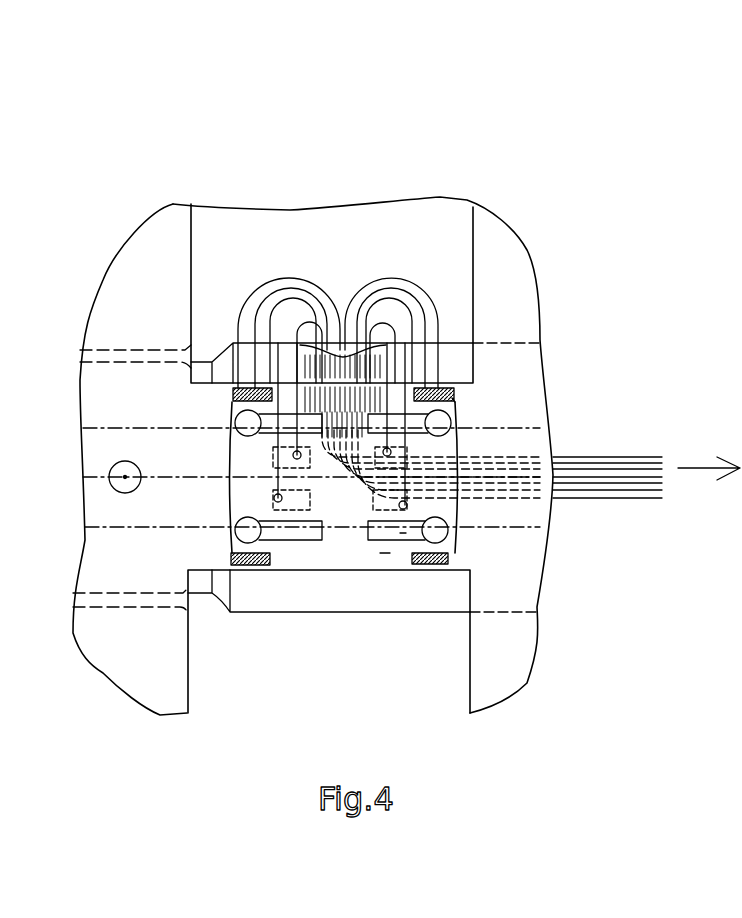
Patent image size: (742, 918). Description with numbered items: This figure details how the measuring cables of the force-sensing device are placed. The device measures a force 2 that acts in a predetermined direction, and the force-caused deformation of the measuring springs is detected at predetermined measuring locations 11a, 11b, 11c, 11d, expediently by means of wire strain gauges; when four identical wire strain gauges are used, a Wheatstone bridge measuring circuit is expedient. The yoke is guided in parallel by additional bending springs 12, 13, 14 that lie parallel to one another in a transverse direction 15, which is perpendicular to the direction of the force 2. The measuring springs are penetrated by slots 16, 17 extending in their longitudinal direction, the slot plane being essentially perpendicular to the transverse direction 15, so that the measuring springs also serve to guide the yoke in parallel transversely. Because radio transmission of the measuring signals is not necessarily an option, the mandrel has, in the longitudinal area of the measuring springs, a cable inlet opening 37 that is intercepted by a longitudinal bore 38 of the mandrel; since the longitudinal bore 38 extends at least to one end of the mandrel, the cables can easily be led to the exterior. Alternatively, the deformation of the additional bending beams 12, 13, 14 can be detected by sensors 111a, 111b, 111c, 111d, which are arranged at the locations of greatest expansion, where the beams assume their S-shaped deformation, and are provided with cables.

The force 2 is at (125, 477).
The measuring location 11a is at (300, 507).
The measuring location 11b is at (302, 460).
The measuring location 11c is at (458, 420).
The measuring location 11d is at (440, 518).
The bending spring 12 is at (385, 552).
The bending spring 13 is at (250, 462).
The bending spring 14 is at (401, 393).
The transverse direction 15 is at (278, 145).
The slot 16 is at (452, 398).
The slot 17 is at (403, 533).
The cable inlet opening 37 is at (357, 260).
The longitudinal bore 38 is at (533, 513).
The sensor 111a is at (257, 565).
The sensor 111b is at (255, 388).
The sensor 111c is at (449, 393).
The sensor 111d is at (432, 557).